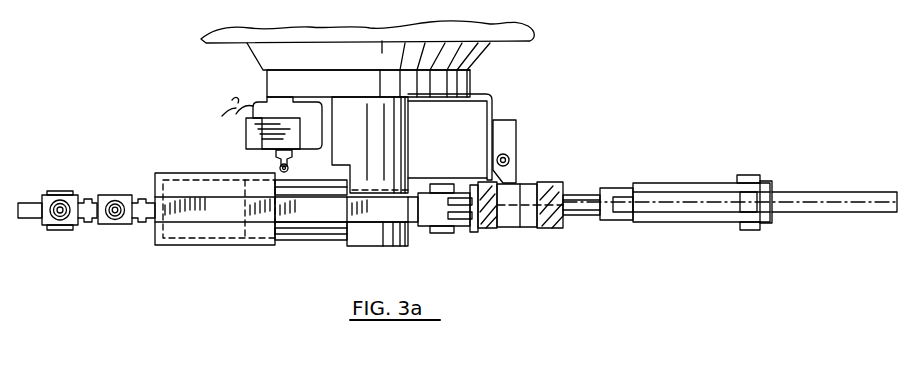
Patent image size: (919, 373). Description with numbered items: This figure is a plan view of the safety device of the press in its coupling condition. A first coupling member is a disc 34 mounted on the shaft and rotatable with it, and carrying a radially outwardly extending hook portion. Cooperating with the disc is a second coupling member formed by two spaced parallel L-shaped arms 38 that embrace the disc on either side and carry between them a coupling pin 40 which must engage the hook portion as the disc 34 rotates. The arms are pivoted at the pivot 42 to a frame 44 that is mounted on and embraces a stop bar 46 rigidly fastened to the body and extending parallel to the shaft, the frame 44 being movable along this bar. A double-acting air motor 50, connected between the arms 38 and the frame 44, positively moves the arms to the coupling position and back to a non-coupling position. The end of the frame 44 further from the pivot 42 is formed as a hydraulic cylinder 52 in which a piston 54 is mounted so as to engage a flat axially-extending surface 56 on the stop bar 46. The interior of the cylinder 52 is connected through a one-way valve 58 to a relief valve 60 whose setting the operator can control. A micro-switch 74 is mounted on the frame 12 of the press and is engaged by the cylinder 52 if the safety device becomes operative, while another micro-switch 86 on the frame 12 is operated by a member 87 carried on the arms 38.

The frame 12 is at (505, 43).
The disc 34 is at (852, 190).
The L-shaped arms 38 is at (676, 183).
The coupling pin 40 is at (748, 212).
The pivot 42 is at (440, 184).
The frame 44 is at (412, 212).
The stop bar 46 is at (368, 240).
The double-acting air motor 50 is at (521, 184).
The hydraulic cylinder 52 is at (203, 245).
The piston 54 is at (310, 240).
The flat axially-extending surface 56 is at (350, 180).
The one-way valve 58 is at (114, 227).
The relief valve 60 is at (58, 229).
The micro-switch 74 is at (262, 143).
The micro-switch 86 is at (500, 137).
The member 87 is at (510, 153).